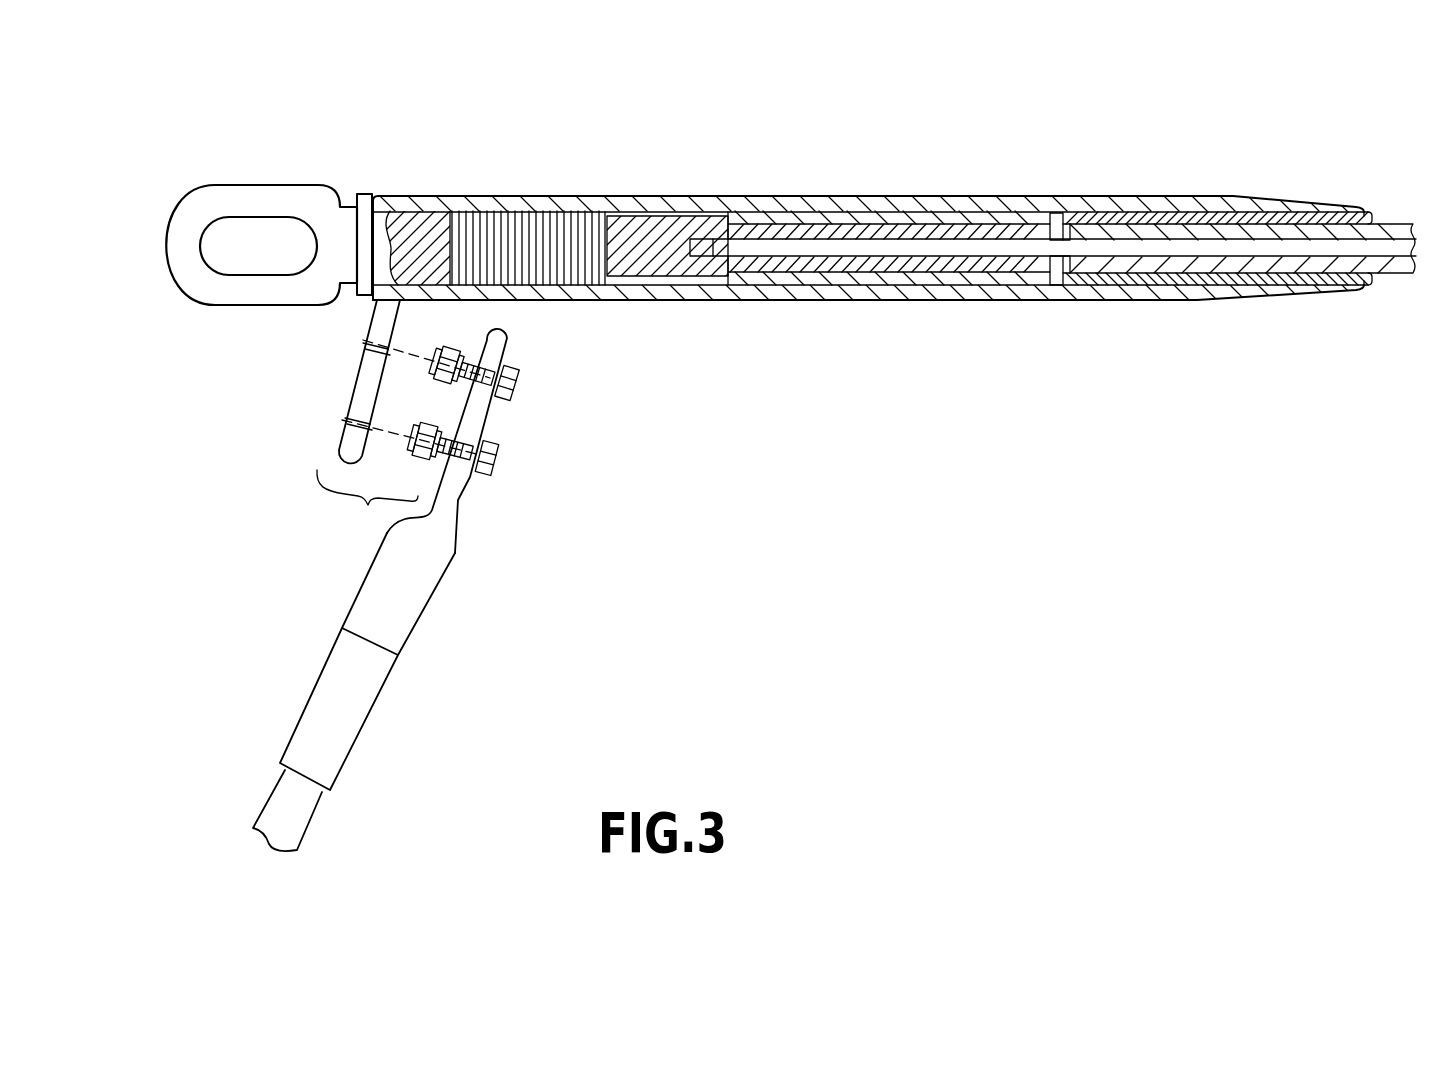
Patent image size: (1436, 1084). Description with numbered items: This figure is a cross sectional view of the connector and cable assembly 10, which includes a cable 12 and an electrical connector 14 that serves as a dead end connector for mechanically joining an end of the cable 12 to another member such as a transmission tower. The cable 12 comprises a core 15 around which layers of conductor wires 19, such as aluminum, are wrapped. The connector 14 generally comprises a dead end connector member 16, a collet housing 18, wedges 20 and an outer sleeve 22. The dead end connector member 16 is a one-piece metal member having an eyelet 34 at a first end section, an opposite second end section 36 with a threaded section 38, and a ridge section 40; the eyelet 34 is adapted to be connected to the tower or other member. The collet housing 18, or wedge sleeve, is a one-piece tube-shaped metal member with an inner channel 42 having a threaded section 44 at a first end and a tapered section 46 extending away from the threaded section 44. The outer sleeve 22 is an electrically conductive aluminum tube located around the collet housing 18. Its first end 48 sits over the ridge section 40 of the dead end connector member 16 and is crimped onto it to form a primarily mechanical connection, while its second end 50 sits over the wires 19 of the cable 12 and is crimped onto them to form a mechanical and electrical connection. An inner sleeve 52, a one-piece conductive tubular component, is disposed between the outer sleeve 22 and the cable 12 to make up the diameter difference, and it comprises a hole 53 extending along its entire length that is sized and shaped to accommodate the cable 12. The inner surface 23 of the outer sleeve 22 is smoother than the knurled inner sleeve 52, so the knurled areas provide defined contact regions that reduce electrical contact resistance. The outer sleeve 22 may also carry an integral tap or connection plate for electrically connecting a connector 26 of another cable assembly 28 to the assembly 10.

The assembly 10 is at (747, 103).
The cable 12 is at (1395, 278).
The electrical connector 14 is at (1105, 305).
The core 15 is at (1037, 247).
The dead end connector member 16 is at (258, 187).
The collet housing 18 is at (1015, 296).
The conductor wires 19 is at (1220, 265).
The wedges 20 is at (852, 233).
The outer sleeve 22 is at (440, 194).
The inner surface 23 is at (1200, 290).
The connector 26 is at (463, 503).
The cable assembly 28 is at (367, 727).
The eyelet 34 is at (212, 294).
The second end section 36 is at (633, 263).
The threaded section 38 is at (742, 283).
The ridge section 40 is at (572, 280).
The inner channel 42 is at (950, 282).
The threaded section 44 is at (780, 283).
The tapered section 46 is at (912, 212).
The first end 48 is at (530, 205).
The second end 50 is at (1239, 212).
The inner sleeve 52 is at (1208, 216).
The hole 53 is at (1050, 217).